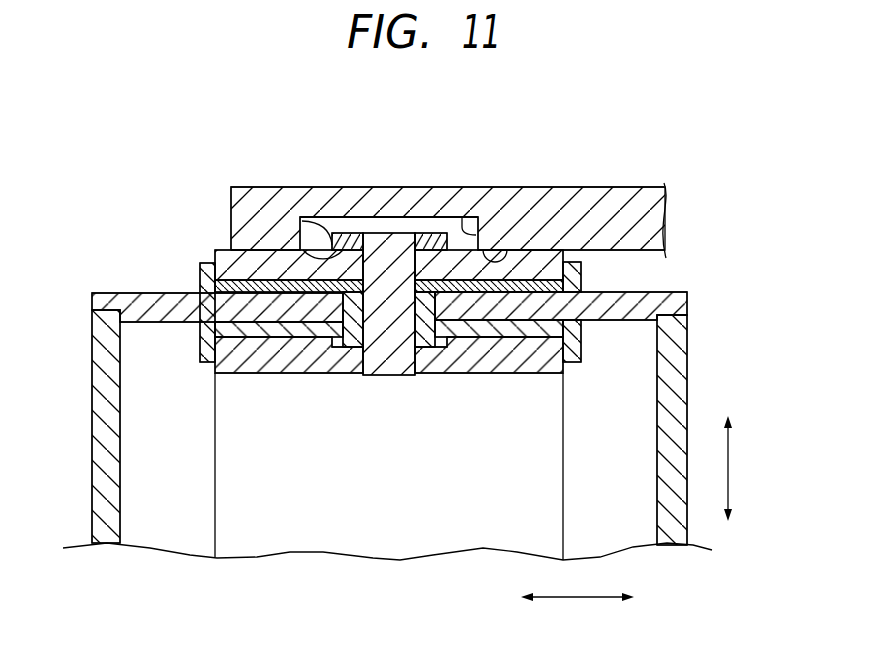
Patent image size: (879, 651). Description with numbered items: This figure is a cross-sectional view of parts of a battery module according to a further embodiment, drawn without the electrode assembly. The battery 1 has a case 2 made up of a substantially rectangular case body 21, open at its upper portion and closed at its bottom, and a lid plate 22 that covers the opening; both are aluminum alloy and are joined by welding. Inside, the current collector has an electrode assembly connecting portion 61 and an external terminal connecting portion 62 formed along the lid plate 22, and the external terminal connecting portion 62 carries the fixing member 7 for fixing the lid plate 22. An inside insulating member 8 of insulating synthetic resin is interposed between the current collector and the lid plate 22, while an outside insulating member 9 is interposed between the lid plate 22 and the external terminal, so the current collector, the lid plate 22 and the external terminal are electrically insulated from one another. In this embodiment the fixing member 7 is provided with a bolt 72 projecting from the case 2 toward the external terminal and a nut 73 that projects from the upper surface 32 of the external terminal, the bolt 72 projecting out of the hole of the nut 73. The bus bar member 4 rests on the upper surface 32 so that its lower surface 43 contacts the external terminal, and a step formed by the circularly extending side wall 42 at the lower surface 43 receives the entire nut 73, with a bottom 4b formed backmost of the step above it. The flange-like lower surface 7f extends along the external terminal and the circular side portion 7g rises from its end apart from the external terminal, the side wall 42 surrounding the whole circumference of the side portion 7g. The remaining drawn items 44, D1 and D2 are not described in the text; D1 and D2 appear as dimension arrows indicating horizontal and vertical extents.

The battery 1 is at (86, 262).
The case 2 is at (780, 308).
The case body 21 is at (682, 350).
The lid plate 22 is at (682, 304).
The upper surface 32 is at (222, 247).
The bus bar member 4 is at (563, 107).
The bottom 4b is at (427, 217).
The side wall 42 is at (462, 217).
The lower surface 43 is at (503, 250).
The cover body 44 is at (547, 187).
The fixing member 7 is at (389, 384).
The bolt 72 is at (377, 240).
The nut 73 is at (332, 235).
The lower surface 7f is at (302, 254).
The side portion 7g is at (310, 218).
The inside insulating member 8 is at (570, 362).
The outside insulating member 9 is at (575, 283).
The electrode assembly connecting portion 61 is at (307, 518).
The external terminal connecting portion 62 is at (497, 373).
The horizontal dimension D1 is at (577, 610).
The vertical dimension D2 is at (744, 468).